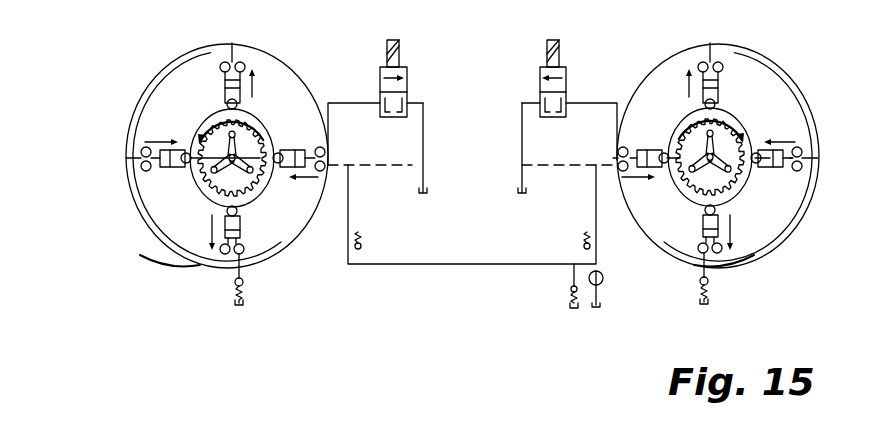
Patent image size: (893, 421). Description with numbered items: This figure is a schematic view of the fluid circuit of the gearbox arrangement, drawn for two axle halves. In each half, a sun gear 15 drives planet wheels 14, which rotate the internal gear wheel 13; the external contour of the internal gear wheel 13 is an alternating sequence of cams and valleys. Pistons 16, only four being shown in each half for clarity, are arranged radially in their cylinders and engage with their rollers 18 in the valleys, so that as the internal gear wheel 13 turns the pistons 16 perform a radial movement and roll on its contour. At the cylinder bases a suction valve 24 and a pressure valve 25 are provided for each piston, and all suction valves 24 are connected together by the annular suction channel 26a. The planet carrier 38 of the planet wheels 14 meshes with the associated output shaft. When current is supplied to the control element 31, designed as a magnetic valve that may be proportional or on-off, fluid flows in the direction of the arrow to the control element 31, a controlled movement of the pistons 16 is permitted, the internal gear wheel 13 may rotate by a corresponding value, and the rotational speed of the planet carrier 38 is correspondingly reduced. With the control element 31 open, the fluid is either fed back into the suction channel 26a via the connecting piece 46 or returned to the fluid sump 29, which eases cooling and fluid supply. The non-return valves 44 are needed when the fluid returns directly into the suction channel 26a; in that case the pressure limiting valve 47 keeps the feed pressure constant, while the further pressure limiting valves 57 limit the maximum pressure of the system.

The internal gear wheel 13 is at (133, 197).
The planet wheels 14 is at (285, 162).
The sun gear 15 is at (125, 97).
The pistons 16 is at (240, 223).
The rollers 18 is at (225, 89).
The suction valve 24 is at (223, 63).
The pressure valve 25 is at (244, 65).
The suction channel 26a is at (150, 213).
The fluid sump 29 is at (515, 196).
The control element 31 is at (405, 83).
The planet carrier 38 is at (222, 157).
The non-return valves 44 is at (588, 238).
The connecting piece 46 is at (568, 168).
The pressure limiting valve 47 is at (572, 275).
The further pressure limiting valves 57 is at (232, 280).